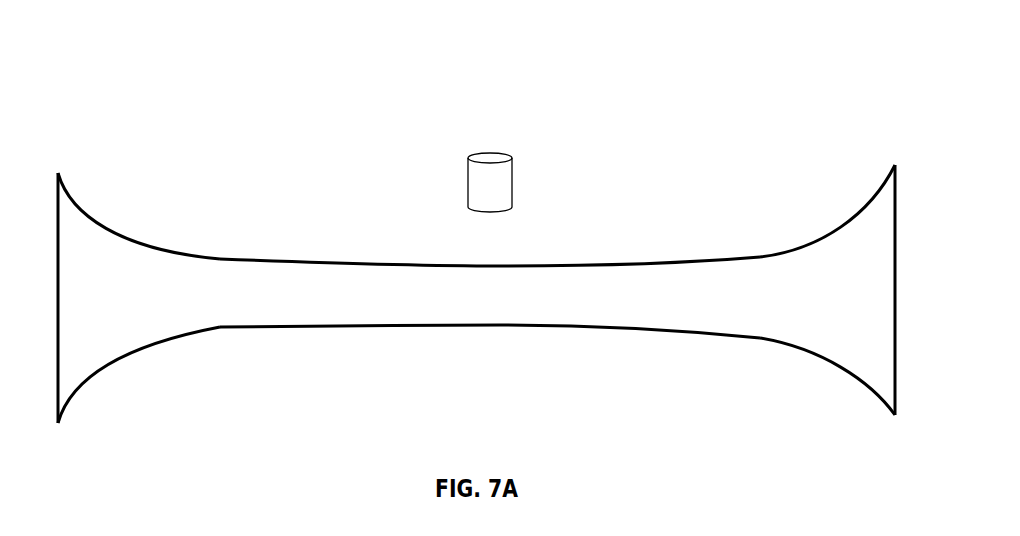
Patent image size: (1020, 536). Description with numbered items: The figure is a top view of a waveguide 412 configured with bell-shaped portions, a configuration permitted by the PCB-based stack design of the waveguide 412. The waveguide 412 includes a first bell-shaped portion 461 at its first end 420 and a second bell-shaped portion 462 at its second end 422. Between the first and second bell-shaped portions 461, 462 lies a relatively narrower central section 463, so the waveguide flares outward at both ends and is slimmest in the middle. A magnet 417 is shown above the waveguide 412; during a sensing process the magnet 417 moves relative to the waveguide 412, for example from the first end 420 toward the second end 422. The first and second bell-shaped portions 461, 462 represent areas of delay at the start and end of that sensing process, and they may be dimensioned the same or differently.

The waveguide 412 is at (475, 264).
The magnet 417 is at (503, 200).
The first end 420 is at (54, 137).
The second end 422 is at (880, 138).
The first bell-shaped portion 461 is at (160, 443).
The second bell-shaped portion 462 is at (896, 443).
The central section 463 is at (490, 310).